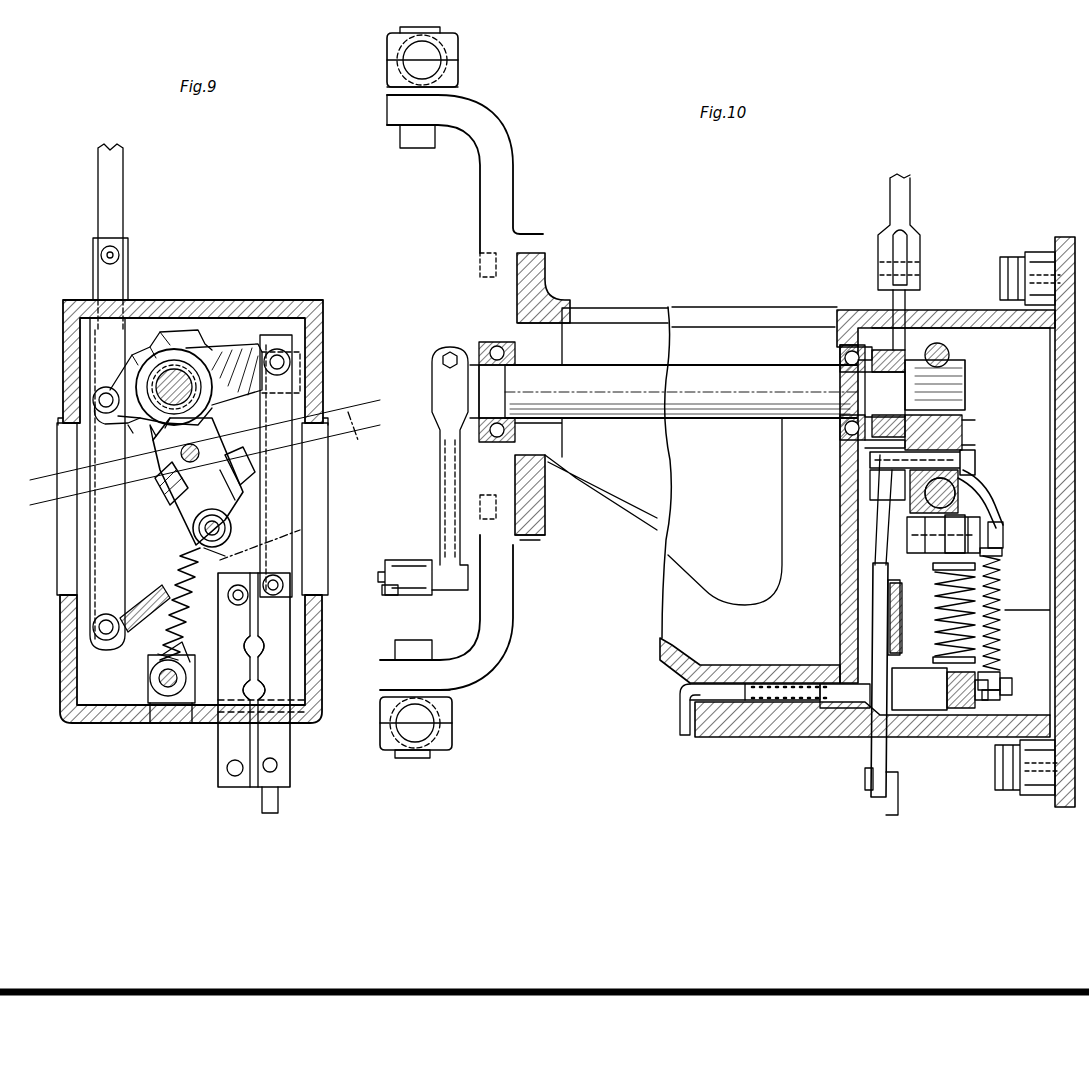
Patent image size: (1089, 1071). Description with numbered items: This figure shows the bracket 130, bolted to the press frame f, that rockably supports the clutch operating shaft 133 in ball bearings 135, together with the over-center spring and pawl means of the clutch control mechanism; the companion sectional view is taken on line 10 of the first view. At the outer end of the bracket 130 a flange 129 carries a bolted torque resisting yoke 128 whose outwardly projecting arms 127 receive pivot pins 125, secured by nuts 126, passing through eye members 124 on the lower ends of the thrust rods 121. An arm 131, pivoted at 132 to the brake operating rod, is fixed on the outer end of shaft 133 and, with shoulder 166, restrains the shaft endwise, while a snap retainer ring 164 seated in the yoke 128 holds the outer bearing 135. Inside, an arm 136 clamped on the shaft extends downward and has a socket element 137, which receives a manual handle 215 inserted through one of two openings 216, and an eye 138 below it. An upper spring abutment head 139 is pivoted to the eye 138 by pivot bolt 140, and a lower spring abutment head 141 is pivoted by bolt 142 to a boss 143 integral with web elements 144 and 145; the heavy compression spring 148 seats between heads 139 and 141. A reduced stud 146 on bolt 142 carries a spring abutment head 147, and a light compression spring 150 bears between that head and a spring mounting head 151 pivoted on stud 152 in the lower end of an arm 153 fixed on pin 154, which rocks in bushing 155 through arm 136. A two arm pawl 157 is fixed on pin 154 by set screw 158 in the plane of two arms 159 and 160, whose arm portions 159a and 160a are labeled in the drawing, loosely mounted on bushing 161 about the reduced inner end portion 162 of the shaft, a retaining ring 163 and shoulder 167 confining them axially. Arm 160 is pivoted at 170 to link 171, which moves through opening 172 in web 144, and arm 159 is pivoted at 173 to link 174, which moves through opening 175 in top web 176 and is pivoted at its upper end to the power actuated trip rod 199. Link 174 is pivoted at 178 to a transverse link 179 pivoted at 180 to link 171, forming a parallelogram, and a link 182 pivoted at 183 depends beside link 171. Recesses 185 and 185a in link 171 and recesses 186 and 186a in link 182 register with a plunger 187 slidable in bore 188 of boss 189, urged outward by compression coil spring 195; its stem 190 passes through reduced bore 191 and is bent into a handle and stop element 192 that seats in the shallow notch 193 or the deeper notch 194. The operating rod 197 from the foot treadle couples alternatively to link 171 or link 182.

In FIG. 9, the section line 10 is at (146, 284).
In FIG. 10, the thrust rod 121 is at (450, 50).
In FIG. 10, the eye member 124 is at (395, 45).
In FIG. 10, the pivot pin 125 is at (415, 758).
In FIG. 10, the nut 126 is at (410, 150).
In FIG. 10, the arm 127 is at (390, 107).
In FIG. 10, the torque resisting yoke 128 is at (516, 192).
In FIG. 10, the flange 129 is at (535, 520).
In FIG. 9, the bracket 130 is at (323, 303).
In FIG. 10, the bracket 130 is at (773, 302).
In FIG. 10, the arm 131 is at (438, 503).
In FIG. 10, the pivot 132 is at (385, 590).
In FIG. 9, the shaft 133 is at (176, 385).
In FIG. 10, the shaft 133 is at (606, 370).
In FIG. 10, the ball bearing 135 is at (522, 342).
In FIG. 9, the arm 136 is at (150, 428).
In FIG. 10, the arm 136 is at (962, 428).
In FIG. 9, the socket element 137 is at (160, 470).
In FIG. 10, the socket element 137 is at (989, 499).
In FIG. 9, the eye 138 is at (240, 518).
In FIG. 10, the eye 138 is at (935, 525).
In FIG. 9, the upper spring abutment head 139 is at (240, 590).
In FIG. 10, the upper spring abutment head 139 is at (978, 580).
In FIG. 9, the pivot bolt 140 is at (200, 530).
In FIG. 10, the pivot bolt 140 is at (905, 536).
In FIG. 9, the lower spring abutment head 141 is at (175, 650).
In FIG. 10, the lower spring abutment head 141 is at (955, 715).
In FIG. 9, the bolt 142 is at (168, 700).
In FIG. 10, the bolt 142 is at (980, 715).
In FIG. 9, the boss 143 is at (150, 690).
In FIG. 10, the boss 143 is at (919, 689).
In FIG. 10, the web element 144 is at (992, 705).
In FIG. 10, the web element 145 is at (855, 575).
In FIG. 10, the reduced stud 146 is at (1000, 683).
In FIG. 10, the spring abutment head 147 is at (1000, 665).
In FIG. 9, the compression spring 148 is at (182, 560).
In FIG. 10, the compression spring 148 is at (978, 600).
In FIG. 10, the compression spring 150 is at (1000, 640).
In FIG. 10, the spring mounting head 151 is at (1000, 556).
In FIG. 10, the stud 152 is at (1000, 535).
In FIG. 10, the arm 153 is at (960, 495).
In FIG. 10, the pin 154 is at (870, 457).
In FIG. 10, the bushing 155 is at (963, 437).
In FIG. 9, the two arm pawl 157 is at (206, 452).
In FIG. 10, the two arm pawl 157 is at (870, 478).
In FIG. 10, the set screw 158 is at (910, 490).
In FIG. 9, the arm 159 is at (115, 380).
In FIG. 10, the arm 159 is at (862, 350).
In FIG. 9, the lever arm 159a is at (150, 442).
In FIG. 9, the arm 160 is at (222, 345).
In FIG. 10, the arm 160 is at (902, 362).
In FIG. 9, the cam arm 160a is at (305, 392).
In FIG. 10, the bushing 161 is at (932, 352).
In FIG. 10, the reduced inner end portion 162 is at (965, 380).
In FIG. 10, the retaining ring 163 is at (868, 385).
In FIG. 10, the snap retainer ring 164 is at (517, 428).
In FIG. 10, the shoulder 166 is at (505, 382).
In FIG. 10, the shoulder 167 is at (852, 420).
In FIG. 9, the pivot 170 is at (279, 355).
In FIG. 9, the link 171 is at (284, 500).
In FIG. 10, the link 171 is at (870, 795).
In FIG. 9, the opening 172 is at (282, 712).
In FIG. 9, the pivot 173 is at (100, 398).
In FIG. 9, the link 174 is at (95, 470).
In FIG. 10, the link 174 is at (893, 550).
In FIG. 9, the opening 175 is at (80, 300).
In FIG. 9, the top web 176 is at (185, 335).
In FIG. 10, the top web 176 is at (955, 312).
In FIG. 9, the pivot 178 is at (95, 630).
In FIG. 9, the transverse link 179 is at (145, 600).
In FIG. 10, the transverse link 179 is at (893, 595).
In FIG. 9, the pivot 180 is at (280, 583).
In FIG. 9, the link 182 is at (222, 755).
In FIG. 9, the pivot 183 is at (245, 590).
In FIG. 9, the semi-circular recess 185 is at (262, 635).
In FIG. 9, the semi-circular recess 185a is at (272, 690).
In FIG. 9, the semi-circular recess 186 is at (262, 655).
In FIG. 9, the semi-circular recess 186a is at (260, 675).
In FIG. 10, the plunger 187 is at (855, 708).
In FIG. 10, the bore 188 is at (760, 712).
In FIG. 10, the boss 189 is at (690, 745).
In FIG. 10, the stem 190 is at (728, 683).
In FIG. 10, the reduced bore 191 is at (725, 722).
In FIG. 10, the handle and stop element 192 is at (688, 725).
In FIG. 10, the notch 193 is at (700, 708).
In FIG. 10, the notch 194 is at (688, 683).
In FIG. 10, the compression coil spring 195 is at (780, 685).
In FIG. 9, the operating rod 197 is at (280, 801).
In FIG. 10, the operating rod 197 is at (898, 806).
In FIG. 9, the trip rod 199 is at (115, 173).
In FIG. 10, the trip rod 199 is at (910, 192).
In FIG. 9, the handle 215 is at (354, 440).
In FIG. 10, the handle 215 is at (975, 480).
In FIG. 9, the opening 216 is at (62, 528).
In FIG. 10, the press frame f is at (1058, 247).